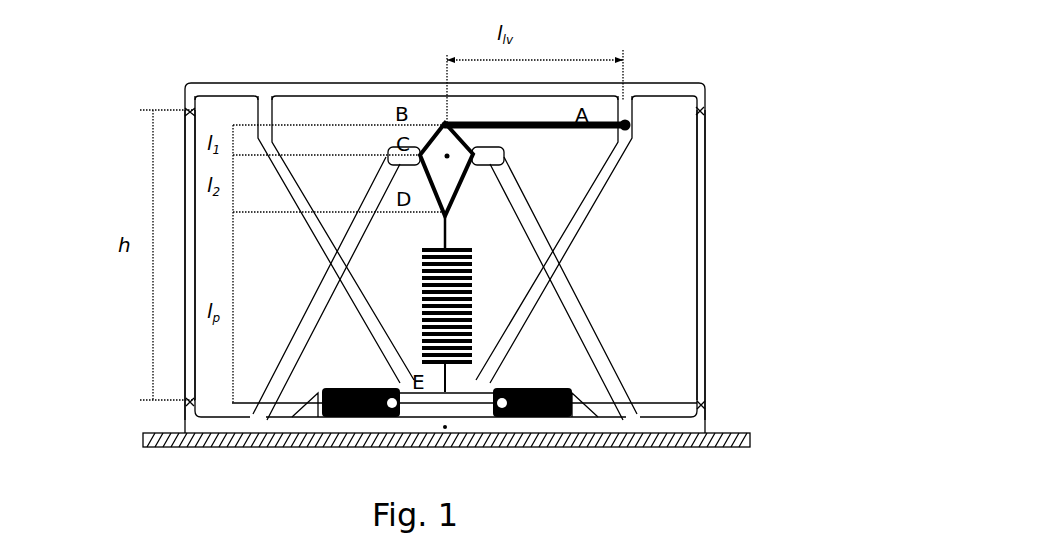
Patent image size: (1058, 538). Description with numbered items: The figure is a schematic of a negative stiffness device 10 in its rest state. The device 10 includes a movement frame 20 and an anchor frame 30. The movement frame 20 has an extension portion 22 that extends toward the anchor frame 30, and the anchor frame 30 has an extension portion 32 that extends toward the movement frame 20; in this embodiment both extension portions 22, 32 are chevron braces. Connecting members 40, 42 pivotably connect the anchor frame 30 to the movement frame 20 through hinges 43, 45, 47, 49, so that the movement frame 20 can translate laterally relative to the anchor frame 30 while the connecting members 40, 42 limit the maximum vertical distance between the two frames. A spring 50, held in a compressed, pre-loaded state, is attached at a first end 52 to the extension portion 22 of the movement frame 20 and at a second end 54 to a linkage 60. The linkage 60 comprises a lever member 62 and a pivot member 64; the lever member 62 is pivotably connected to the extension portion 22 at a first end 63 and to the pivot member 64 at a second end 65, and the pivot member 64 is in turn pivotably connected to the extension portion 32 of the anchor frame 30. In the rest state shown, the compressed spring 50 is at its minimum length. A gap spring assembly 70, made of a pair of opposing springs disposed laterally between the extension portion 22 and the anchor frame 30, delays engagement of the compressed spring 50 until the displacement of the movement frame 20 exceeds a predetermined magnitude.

The device 10 is at (376, 220).
The movement frame 20 is at (293, 92).
The extension portion 22 is at (543, 295).
The anchor frame 30 is at (595, 428).
The extension portion 32 is at (588, 330).
The connecting member 40 is at (192, 340).
The connecting member 42 is at (704, 332).
The hinge 43 is at (188, 112).
The hinge 45 is at (700, 111).
The hinge 47 is at (704, 405).
The hinge 49 is at (190, 402).
The spring 50 is at (505, 410).
The first end 52 is at (447, 383).
The second end 54 is at (452, 218).
The linkage 60 is at (492, 108).
The lever member 62 is at (498, 124).
The first end 63 is at (626, 121).
The pivot member 64 is at (442, 121).
The second end 65 is at (446, 154).
The gap spring assembly 70 is at (507, 417).